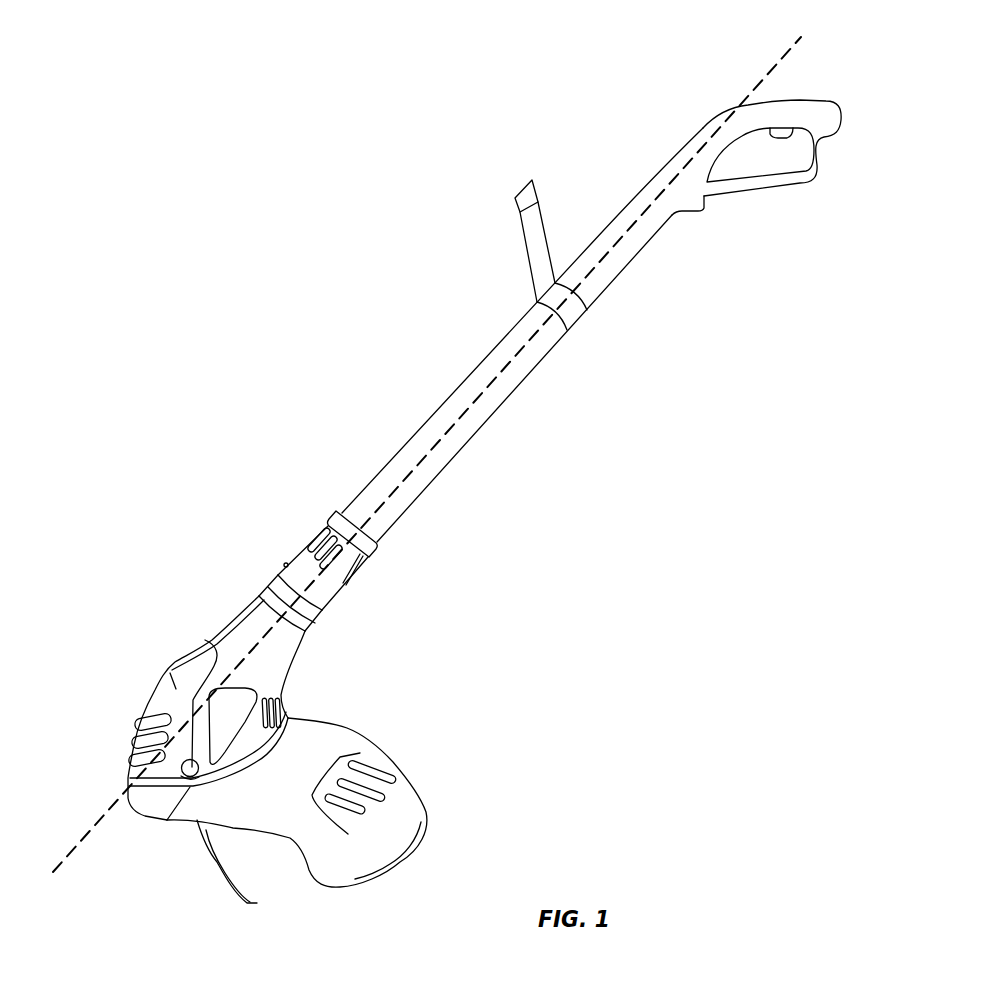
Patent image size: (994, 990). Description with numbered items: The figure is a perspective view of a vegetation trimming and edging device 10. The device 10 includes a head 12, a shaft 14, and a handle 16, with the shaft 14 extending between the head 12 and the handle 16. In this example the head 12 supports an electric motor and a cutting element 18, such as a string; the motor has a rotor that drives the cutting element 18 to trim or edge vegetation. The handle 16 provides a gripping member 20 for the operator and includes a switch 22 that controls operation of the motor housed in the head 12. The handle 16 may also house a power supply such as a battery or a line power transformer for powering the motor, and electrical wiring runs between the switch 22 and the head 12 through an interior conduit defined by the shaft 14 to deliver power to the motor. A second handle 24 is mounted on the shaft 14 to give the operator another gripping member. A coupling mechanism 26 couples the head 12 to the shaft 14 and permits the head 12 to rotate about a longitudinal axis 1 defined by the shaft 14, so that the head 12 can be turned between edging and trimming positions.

The longitudinal axis 1 is at (432, 449).
The vegetation trimming and edging device 10 is at (300, 240).
The head 12 is at (160, 660).
The shaft 14 is at (483, 422).
The handle 16 is at (738, 88).
The cutting element 18 is at (253, 906).
The gripping member 20 is at (805, 107).
The switch 22 is at (780, 138).
The second handle 24 is at (522, 193).
The coupling mechanism 26 is at (318, 503).